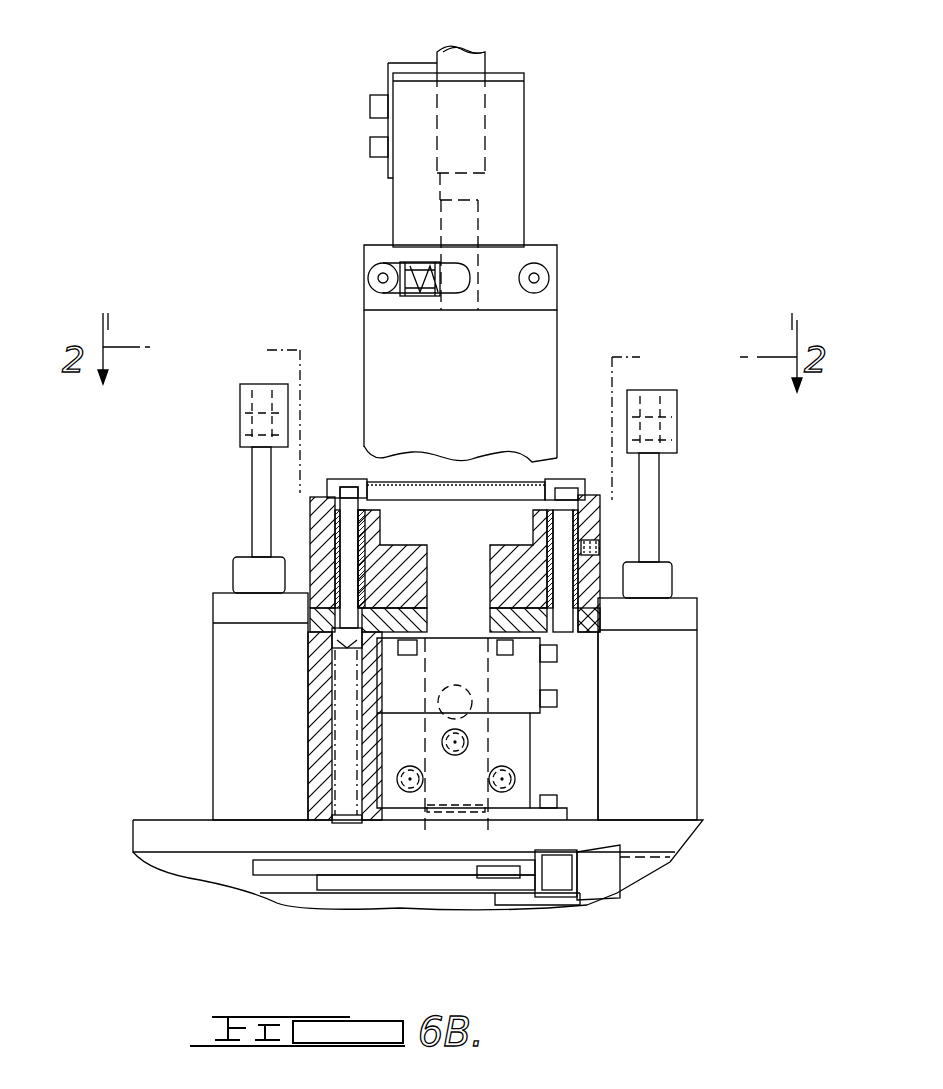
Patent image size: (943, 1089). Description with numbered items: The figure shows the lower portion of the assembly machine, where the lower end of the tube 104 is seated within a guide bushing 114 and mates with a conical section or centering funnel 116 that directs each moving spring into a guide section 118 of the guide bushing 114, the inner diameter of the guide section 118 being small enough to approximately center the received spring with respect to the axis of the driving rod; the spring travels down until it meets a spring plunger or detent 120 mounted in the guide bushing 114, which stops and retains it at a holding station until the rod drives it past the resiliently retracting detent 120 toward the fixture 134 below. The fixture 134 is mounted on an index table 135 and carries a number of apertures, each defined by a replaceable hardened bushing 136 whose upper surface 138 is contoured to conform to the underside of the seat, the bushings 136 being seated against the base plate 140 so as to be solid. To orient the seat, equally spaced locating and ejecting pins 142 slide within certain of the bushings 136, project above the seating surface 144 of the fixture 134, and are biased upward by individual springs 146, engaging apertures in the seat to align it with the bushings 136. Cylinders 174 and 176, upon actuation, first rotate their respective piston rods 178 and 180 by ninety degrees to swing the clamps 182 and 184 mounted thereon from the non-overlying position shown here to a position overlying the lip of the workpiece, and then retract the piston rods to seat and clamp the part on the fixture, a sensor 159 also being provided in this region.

The tube 104 is at (484, 55).
The guide bushing 114 is at (512, 122).
The centering funnel 116 is at (478, 190).
The guide section 118 is at (478, 222).
The spring plunger or detent 120 is at (447, 288).
The fixture 134 is at (424, 539).
The index table 135 is at (702, 655).
The hardened bushing 136 is at (372, 532).
The upper surface 138 is at (544, 512).
The base plate 140 is at (418, 622).
The locating and ejecting pins 142 is at (342, 531).
The seating surface 144 is at (333, 505).
The springs 146 is at (345, 743).
The sensor 159 is at (602, 872).
The cylinder 174 is at (227, 672).
The cylinder 176 is at (677, 714).
The piston rod 178 is at (260, 467).
The piston rod 180 is at (652, 475).
The clamp 182 is at (240, 397).
The clamp 184 is at (677, 400).